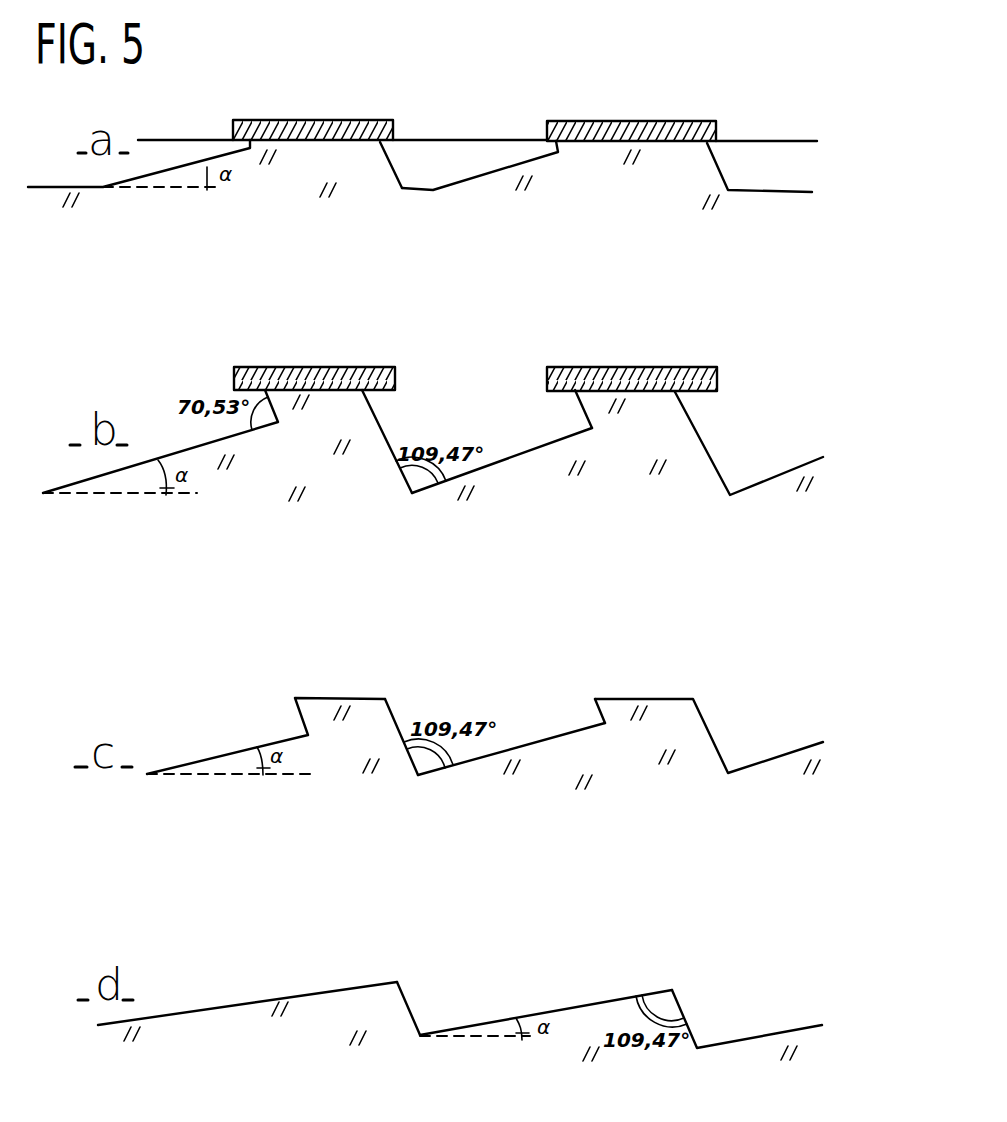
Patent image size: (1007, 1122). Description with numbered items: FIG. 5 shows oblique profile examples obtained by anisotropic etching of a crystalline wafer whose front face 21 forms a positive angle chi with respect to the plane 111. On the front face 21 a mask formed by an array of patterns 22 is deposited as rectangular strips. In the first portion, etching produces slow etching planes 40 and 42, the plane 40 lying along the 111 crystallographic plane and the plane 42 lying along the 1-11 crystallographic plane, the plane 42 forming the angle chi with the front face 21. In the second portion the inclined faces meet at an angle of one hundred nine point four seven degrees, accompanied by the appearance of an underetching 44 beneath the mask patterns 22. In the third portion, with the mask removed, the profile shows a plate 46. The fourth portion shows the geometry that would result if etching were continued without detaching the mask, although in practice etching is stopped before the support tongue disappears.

The front face 21 is at (758, 142).
The mask patterns 22 is at (297, 120).
The slow etching plane 40 is at (390, 157).
The slow etching plane 42 is at (503, 167).
The underetching 44 is at (580, 408).
The plate 46 is at (337, 698).
The (111) crystallographic plane 111 is at (163, 166).
The (1-11) crystallographic plane 1-11 is at (418, 178).